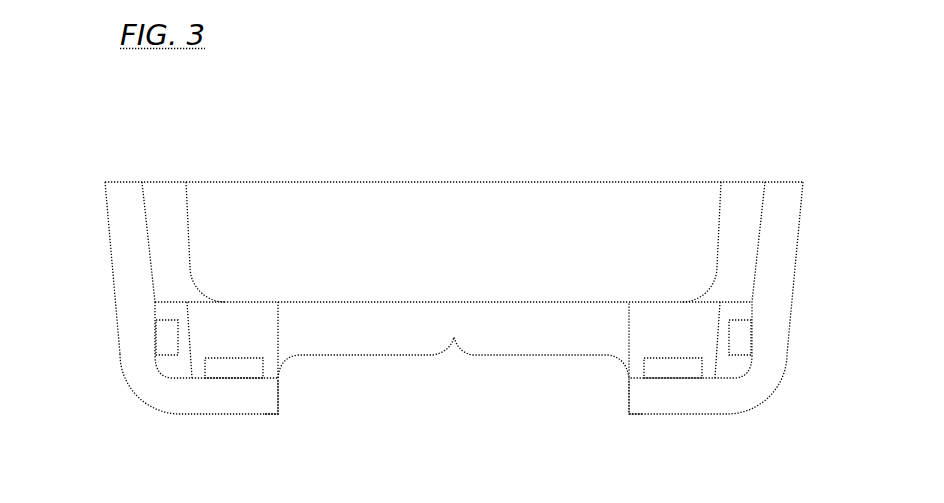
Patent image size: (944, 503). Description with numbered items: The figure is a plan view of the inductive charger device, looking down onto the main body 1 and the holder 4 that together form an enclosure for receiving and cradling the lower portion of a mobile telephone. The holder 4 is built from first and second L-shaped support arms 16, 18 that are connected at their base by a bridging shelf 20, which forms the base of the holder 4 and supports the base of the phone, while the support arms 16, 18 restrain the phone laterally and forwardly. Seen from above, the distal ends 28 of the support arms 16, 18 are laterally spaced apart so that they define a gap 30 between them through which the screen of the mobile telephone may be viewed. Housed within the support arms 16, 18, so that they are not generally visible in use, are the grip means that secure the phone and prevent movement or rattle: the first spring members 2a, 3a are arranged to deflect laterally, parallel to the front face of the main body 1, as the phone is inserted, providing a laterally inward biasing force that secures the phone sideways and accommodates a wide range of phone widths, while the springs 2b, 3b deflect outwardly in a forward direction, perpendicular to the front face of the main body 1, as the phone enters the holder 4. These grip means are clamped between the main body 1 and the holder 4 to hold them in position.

The main body 1 is at (276, 236).
The holder 4 is at (124, 297).
The first support arm 16 is at (130, 329).
The second support arm 18 is at (778, 281).
The bridging shelf 20 is at (672, 213).
The gap 30 is at (453, 343).
The first spring member 2a is at (240, 370).
The spring 2b is at (168, 339).
The first spring member 3a is at (675, 370).
The spring 3b is at (745, 338).
The distal ends 28 is at (272, 400).